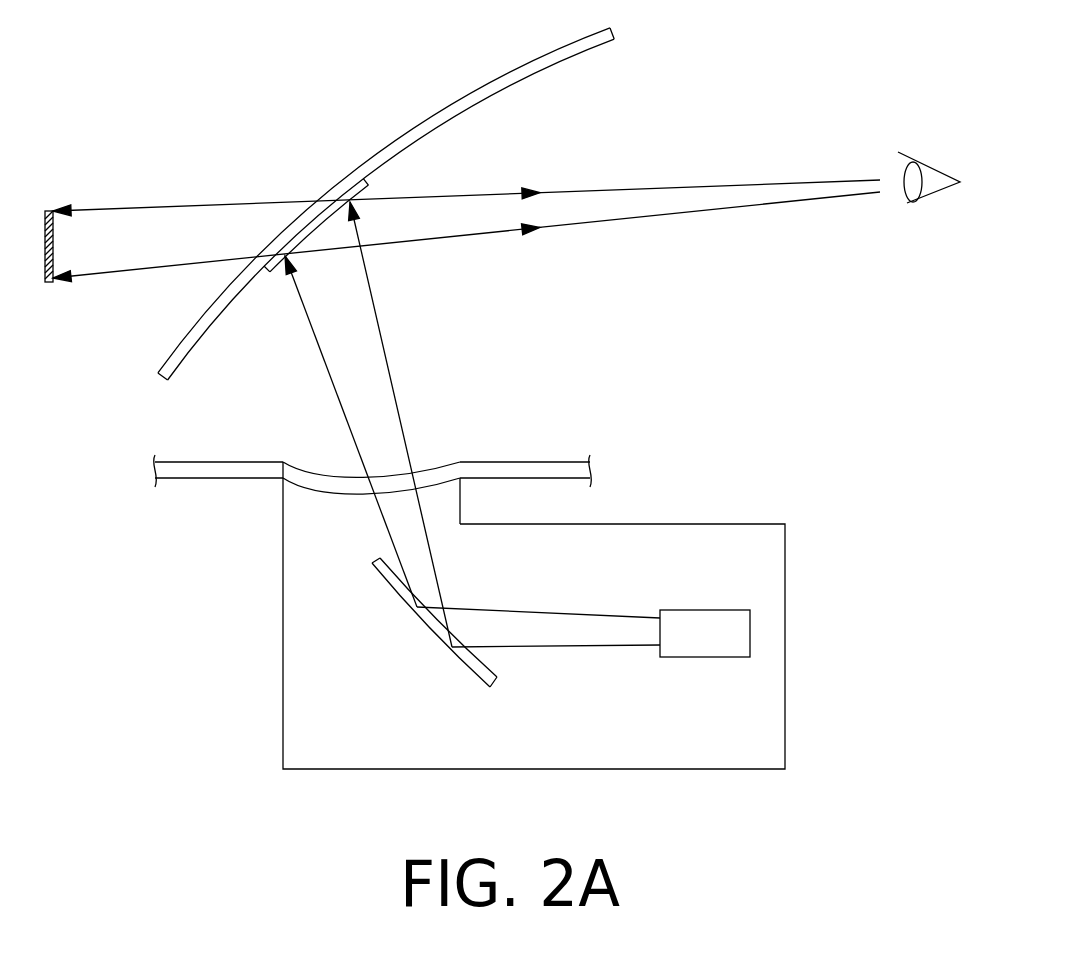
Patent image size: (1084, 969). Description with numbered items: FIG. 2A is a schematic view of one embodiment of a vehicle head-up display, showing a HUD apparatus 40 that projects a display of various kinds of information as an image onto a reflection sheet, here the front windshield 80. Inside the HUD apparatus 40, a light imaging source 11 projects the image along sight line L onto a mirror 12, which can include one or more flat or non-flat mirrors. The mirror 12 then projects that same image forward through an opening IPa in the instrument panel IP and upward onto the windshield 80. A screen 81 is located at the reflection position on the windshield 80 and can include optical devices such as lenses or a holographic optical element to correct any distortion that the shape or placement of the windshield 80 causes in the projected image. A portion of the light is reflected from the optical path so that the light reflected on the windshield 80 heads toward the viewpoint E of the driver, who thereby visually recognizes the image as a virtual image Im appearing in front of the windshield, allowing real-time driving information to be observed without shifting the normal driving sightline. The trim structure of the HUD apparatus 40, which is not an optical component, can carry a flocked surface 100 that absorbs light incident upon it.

The front windshield 80 is at (485, 83).
The screen 81 is at (368, 183).
The flocked surface 100 is at (472, 458).
The HUD apparatus 40 is at (757, 512).
The light imaging source 11 is at (720, 610).
The mirror 12 is at (418, 627).
The sight line L is at (384, 347).
The instrument panel IP is at (228, 462).
The opening IPa is at (298, 462).
The virtual image Im is at (46, 211).
The viewpoint E is at (933, 167).